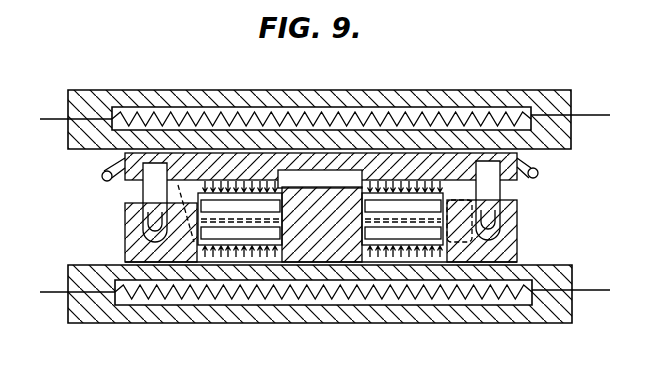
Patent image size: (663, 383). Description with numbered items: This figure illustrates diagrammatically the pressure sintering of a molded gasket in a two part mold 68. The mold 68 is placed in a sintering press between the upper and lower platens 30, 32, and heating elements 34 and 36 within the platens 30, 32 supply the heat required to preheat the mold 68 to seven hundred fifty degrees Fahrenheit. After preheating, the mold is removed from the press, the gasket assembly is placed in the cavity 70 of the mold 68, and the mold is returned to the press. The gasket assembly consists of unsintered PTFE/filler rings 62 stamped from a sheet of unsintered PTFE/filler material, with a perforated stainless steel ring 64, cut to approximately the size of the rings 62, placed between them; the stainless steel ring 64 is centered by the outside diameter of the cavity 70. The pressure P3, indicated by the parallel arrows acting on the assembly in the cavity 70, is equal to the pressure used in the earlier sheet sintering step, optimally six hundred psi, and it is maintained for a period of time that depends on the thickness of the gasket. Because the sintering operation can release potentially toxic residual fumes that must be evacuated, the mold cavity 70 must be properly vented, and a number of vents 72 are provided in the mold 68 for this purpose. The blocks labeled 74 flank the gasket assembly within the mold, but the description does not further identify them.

The platen 30 is at (199, 106).
The platen 32 is at (302, 312).
The heating element 34 is at (397, 120).
The heating element 36 is at (364, 292).
The unsintered PTFE/filler ring 62 is at (368, 232).
The perforated stainless steel ring 64 is at (275, 221).
The two part mold 68 is at (512, 212).
The cavity 70 is at (233, 262).
The vent 72 is at (170, 92).
The clamp block 74 is at (192, 244).
The pressure P3 is at (238, 180).